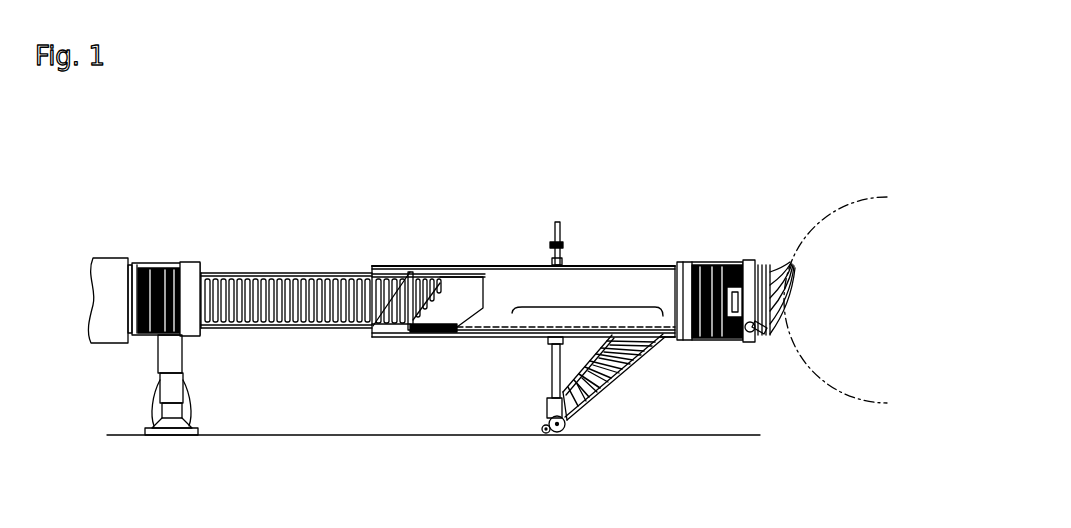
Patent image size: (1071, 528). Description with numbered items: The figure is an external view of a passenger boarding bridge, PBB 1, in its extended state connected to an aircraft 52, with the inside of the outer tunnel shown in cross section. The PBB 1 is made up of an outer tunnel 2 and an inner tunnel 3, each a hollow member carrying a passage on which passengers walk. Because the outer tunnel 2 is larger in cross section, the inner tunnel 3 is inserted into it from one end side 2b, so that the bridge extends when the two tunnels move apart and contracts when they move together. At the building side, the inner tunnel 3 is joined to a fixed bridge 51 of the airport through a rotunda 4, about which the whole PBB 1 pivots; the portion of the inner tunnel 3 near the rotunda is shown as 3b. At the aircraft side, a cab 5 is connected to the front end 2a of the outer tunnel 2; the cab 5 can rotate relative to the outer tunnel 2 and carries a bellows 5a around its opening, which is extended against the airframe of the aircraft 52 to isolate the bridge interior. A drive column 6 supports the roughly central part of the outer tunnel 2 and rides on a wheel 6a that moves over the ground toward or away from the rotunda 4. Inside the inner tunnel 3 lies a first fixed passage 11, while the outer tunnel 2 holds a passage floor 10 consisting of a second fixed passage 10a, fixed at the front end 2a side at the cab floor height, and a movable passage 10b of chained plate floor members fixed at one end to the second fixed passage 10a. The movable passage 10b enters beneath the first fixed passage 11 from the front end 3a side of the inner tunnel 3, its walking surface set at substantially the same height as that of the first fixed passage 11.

The PBB 1 is at (360, 242).
The outer tunnel 2 is at (562, 296).
The front end of outer tunnel 2a is at (660, 265).
The one end side of outer tunnel 2b is at (397, 272).
The inner tunnel 3 is at (312, 272).
The front end of inner tunnel 3a is at (442, 287).
The proximal portion of tunnel 3 3b is at (217, 278).
The rotunda 4 is at (175, 267).
The cab 5 is at (728, 267).
The bellows 5a is at (770, 262).
The drive column 6 is at (555, 220).
The wheel 6a is at (565, 425).
The passage floor 10 is at (547, 303).
The second fixed passage 10a is at (667, 338).
The movable passage 10b is at (533, 328).
The first fixed passage 11 is at (440, 334).
The fixed bridge 51 is at (108, 268).
The aircraft 52 is at (825, 212).